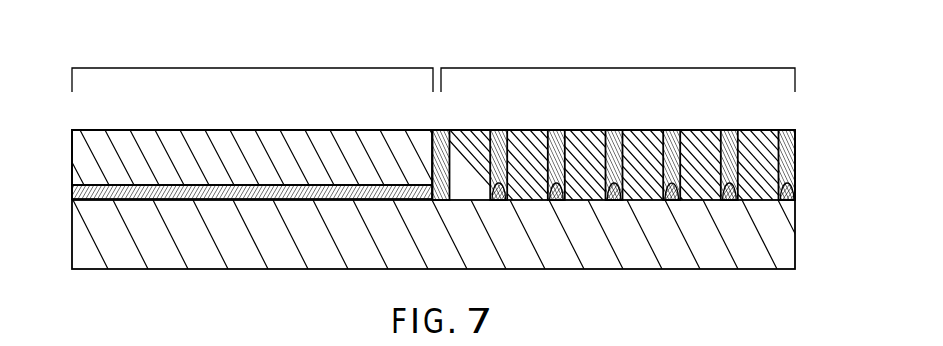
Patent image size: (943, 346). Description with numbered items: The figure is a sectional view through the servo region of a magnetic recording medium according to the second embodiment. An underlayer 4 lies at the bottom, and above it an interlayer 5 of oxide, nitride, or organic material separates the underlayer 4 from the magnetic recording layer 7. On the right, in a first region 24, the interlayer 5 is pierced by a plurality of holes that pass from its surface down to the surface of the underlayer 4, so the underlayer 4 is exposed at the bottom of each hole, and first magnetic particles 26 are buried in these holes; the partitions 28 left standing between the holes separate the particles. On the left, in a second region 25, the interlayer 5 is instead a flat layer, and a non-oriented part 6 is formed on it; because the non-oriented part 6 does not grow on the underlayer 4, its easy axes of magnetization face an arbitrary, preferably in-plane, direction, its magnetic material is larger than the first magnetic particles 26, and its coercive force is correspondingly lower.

The underlayer 4 is at (790, 243).
The interlayer 5 is at (70, 188).
The non-oriented part 6 is at (249, 143).
The magnetic recording layer 7 is at (70, 150).
The first region 24 is at (620, 68).
The second region 25 is at (252, 68).
The first magnetic particles 26 is at (532, 143).
The partition wall 28 is at (678, 133).